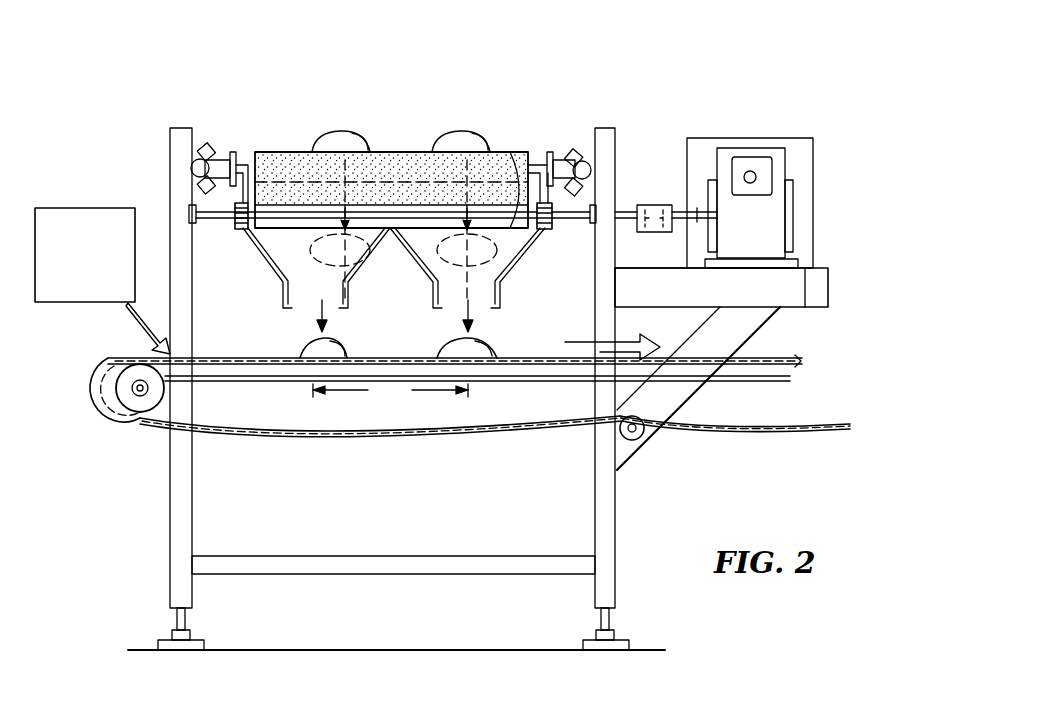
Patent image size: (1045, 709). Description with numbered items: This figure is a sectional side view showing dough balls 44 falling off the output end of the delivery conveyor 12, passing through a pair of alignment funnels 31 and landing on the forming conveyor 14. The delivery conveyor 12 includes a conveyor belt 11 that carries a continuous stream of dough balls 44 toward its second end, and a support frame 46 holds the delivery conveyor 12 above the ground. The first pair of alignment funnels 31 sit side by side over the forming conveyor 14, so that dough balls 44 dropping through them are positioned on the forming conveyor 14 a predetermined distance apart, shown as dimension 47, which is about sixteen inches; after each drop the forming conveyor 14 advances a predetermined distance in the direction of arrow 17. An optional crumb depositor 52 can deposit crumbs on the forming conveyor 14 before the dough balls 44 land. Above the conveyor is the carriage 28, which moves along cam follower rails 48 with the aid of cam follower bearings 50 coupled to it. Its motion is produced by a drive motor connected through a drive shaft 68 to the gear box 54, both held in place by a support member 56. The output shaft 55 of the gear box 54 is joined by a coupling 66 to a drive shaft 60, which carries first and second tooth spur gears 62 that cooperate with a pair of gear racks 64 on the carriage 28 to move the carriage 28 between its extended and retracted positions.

The conveyor belt 11 is at (402, 152).
The delivery conveyor 12 is at (655, 130).
The forming conveyor 14 is at (245, 358).
The arrow 17 is at (636, 342).
The carriage 28 is at (240, 165).
The alignment funnels 31 is at (270, 262).
The dough balls 44 is at (332, 134).
The support frame 46 is at (186, 484).
The dimension 47 is at (390, 391).
The cam follower rails 48 is at (192, 162).
The cam follower bearings 50 is at (212, 148).
The crumb depositor 52 is at (97, 230).
The gear box 54 is at (800, 150).
The output shaft 55 is at (697, 208).
The support member 56 is at (778, 294).
The drive shaft 60 is at (581, 224).
The tooth spur gears 62 is at (240, 224).
The gear racks 64 is at (250, 200).
The coupling 66 is at (646, 206).
The drive shaft 68 is at (750, 171).